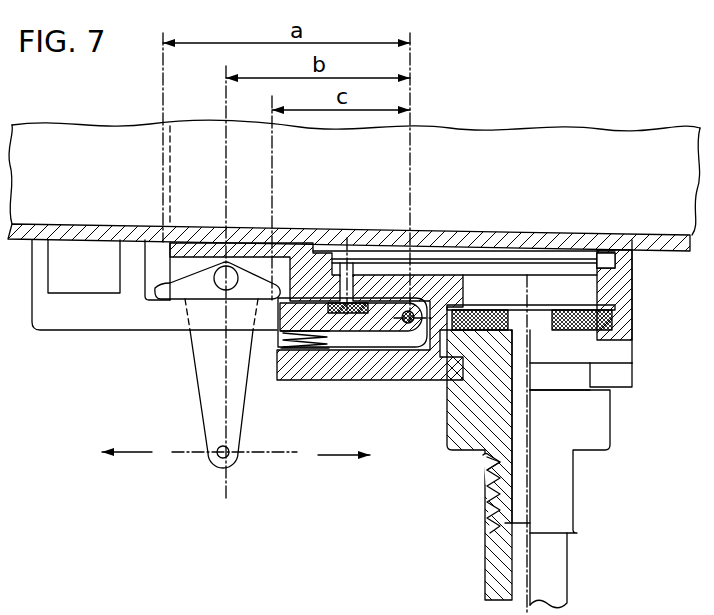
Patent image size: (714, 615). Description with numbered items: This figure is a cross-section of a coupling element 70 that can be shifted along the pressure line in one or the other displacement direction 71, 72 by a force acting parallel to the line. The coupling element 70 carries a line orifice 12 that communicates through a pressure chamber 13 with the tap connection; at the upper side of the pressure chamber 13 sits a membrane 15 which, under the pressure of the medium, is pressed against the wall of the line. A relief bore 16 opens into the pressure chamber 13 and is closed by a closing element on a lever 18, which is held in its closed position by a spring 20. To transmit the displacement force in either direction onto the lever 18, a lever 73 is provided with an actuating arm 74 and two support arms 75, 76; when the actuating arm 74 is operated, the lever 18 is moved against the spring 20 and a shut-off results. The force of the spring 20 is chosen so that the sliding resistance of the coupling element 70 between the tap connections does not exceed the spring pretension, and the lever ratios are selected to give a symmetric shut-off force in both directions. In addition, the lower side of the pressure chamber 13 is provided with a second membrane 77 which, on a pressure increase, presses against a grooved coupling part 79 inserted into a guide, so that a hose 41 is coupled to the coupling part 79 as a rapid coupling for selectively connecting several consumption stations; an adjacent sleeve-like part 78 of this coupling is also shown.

The line orifice 12 is at (545, 328).
The pressure chamber 13 is at (617, 296).
The membrane 15 is at (470, 249).
The relief bore 16 is at (349, 251).
The lever 18 is at (51, 333).
The spring 20 is at (320, 350).
The hose 41 is at (552, 581).
The coupling element 70 is at (430, 427).
The displacement direction 71 is at (140, 453).
The displacement direction 72 is at (332, 456).
The lever 73 is at (178, 375).
The actuating arm 74 is at (232, 440).
The support arm 75 is at (158, 302).
The support arm 76 is at (264, 342).
The second membrane 77 is at (615, 316).
The sleeve 78 is at (620, 378).
The coupling part 79 is at (598, 429).